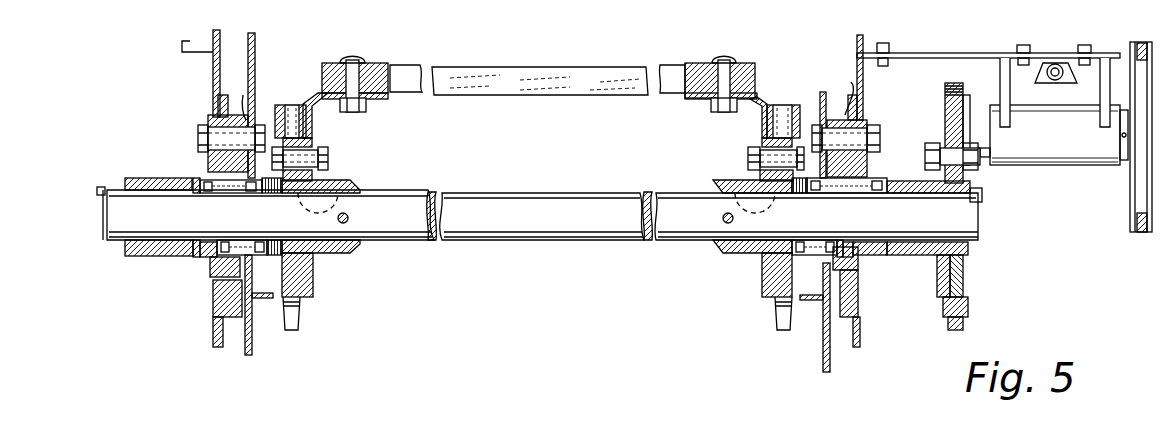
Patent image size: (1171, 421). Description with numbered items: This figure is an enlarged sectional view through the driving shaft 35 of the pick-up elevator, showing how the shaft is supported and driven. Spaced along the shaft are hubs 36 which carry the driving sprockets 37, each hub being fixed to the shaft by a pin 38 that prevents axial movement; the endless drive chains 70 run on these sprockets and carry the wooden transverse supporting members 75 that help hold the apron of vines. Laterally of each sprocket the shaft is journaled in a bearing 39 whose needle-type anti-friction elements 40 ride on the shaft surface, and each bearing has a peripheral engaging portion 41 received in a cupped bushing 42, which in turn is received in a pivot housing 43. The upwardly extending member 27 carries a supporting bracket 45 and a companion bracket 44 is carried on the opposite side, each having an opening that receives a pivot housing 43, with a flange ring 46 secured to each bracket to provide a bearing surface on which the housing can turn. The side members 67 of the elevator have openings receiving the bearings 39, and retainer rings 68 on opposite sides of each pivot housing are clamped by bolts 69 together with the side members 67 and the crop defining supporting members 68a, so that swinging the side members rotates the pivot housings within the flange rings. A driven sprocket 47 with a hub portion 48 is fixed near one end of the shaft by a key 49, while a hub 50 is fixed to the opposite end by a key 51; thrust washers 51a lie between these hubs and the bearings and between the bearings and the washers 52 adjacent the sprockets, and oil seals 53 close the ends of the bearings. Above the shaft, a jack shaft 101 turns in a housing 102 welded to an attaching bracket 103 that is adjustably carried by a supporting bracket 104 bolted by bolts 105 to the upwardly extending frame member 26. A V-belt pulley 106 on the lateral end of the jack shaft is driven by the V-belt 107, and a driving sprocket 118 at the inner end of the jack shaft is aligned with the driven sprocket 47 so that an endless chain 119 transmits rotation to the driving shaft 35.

The upwardly extending frame member 26 is at (895, 54).
The upwardly extending member 27 is at (188, 48).
The driving shaft 35 is at (600, 222).
The hub 36 is at (362, 180).
The driving sprocket 37 is at (297, 323).
The pin 38 is at (347, 222).
The bearing 39 is at (200, 256).
The anti-friction element 40 is at (207, 255).
The engaging portion 41 is at (220, 262).
The cupped bushing 42 is at (222, 268).
The pivot housing 43 is at (222, 303).
The supporting bracket 44 is at (863, 82).
The supporting bracket 45 is at (213, 68).
The flange ring 46 is at (221, 97).
The driving sprocket 47 is at (957, 300).
The hub portion 48 is at (966, 248).
The key 49 is at (982, 205).
The hub 50 is at (125, 251).
The key 51 is at (97, 190).
The thrust washer 51a is at (192, 180).
The washer 52 is at (268, 260).
The oil seal 53 is at (196, 250).
The side member 67 is at (243, 96).
The retainer ring 68 is at (208, 117).
The crop defining supporting member 68a is at (258, 45).
The bolt 69 is at (200, 132).
The endless drive chain 70 is at (278, 105).
The transverse supporting member 75 is at (573, 96).
The jack shaft 101 is at (1115, 142).
The housing 102 is at (1050, 135).
The attaching bracket 103 is at (1005, 97).
The supporting bracket 104 is at (1003, 58).
The bolt 105 is at (1092, 58).
The V-belt pulley 106 is at (1128, 206).
The V-belt 107 is at (1138, 233).
The driving sprocket 118 is at (977, 108).
The endless chain 119 is at (967, 329).